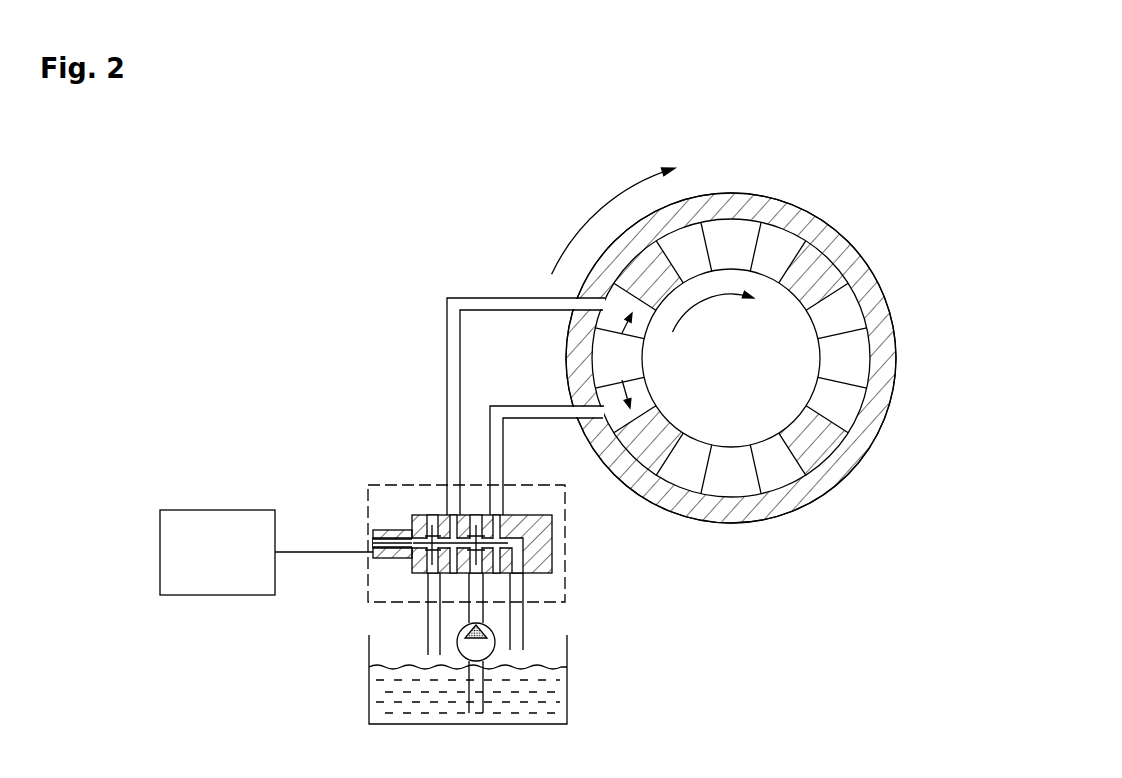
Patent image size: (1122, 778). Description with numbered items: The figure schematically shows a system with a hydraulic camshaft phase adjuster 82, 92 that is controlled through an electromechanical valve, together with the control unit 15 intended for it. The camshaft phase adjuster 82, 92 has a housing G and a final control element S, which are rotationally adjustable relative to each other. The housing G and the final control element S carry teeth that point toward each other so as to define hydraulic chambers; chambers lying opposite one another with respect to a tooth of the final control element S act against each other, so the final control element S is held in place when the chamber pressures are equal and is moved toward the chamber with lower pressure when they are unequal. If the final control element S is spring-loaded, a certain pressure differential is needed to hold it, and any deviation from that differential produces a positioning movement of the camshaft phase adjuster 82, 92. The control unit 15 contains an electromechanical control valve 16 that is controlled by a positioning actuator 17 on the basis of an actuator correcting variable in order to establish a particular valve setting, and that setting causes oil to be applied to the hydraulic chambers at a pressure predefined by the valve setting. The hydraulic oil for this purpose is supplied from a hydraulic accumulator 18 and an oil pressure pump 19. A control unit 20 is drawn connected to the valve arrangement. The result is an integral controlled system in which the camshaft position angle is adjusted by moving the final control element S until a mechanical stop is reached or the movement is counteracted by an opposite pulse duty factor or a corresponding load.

The control unit 15 is at (1013, 160).
The electromechanical control valve 16 is at (417, 518).
The positioning actuator 17 is at (383, 530).
The hydraulic accumulator 18 is at (552, 682).
The oil pressure pump 19 is at (496, 643).
The control unit 20 is at (233, 530).
The hydraulic camshaft phase adjuster 82 is at (774, 358).
The hydraulic camshaft phase adjuster 92 is at (833, 245).
The housing G is at (731, 193).
The final control element S is at (863, 348).